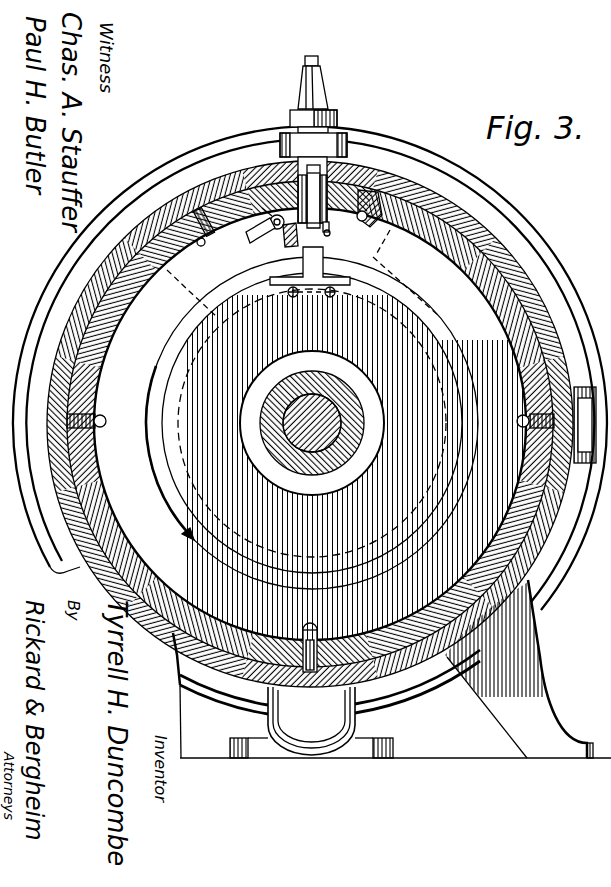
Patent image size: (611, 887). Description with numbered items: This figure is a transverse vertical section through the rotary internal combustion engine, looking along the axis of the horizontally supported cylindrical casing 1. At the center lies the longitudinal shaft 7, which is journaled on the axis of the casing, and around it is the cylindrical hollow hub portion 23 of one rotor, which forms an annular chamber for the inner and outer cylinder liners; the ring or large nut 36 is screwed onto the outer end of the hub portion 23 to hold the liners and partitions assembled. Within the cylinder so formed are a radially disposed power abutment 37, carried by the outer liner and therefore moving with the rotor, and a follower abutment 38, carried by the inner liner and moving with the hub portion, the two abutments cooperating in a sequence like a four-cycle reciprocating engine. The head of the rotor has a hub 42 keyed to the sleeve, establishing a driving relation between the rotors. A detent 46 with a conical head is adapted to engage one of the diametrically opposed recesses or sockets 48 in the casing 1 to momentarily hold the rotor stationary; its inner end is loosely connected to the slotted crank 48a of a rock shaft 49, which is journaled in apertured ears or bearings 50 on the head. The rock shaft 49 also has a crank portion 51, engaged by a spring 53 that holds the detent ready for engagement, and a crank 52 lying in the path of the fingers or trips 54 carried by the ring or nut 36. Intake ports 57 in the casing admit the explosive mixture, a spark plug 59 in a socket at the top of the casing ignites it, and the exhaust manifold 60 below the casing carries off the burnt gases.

The cylindrical casing 1 is at (492, 242).
The longitudinal shaft 7 is at (340, 432).
The hollow hub portion 23 is at (310, 424).
The ring or large nut 36 is at (432, 352).
The power abutment 37 is at (309, 423).
The follower abutment 38 is at (380, 265).
The hub 42 is at (284, 450).
The detent 46 is at (330, 172).
The recesses or sockets 48 is at (347, 137).
The slotted crank 48a is at (331, 228).
The rock shaft 49 is at (262, 207).
The apertured ears or bearings 50 is at (270, 236).
The crank portion 51 is at (246, 243).
The crank 52 is at (277, 246).
The spring 53 is at (203, 212).
The fingers or trips 54 is at (323, 271).
The ports 57 is at (590, 470).
The spark plugs 59 is at (322, 90).
The exhaust manifold 60 is at (350, 727).